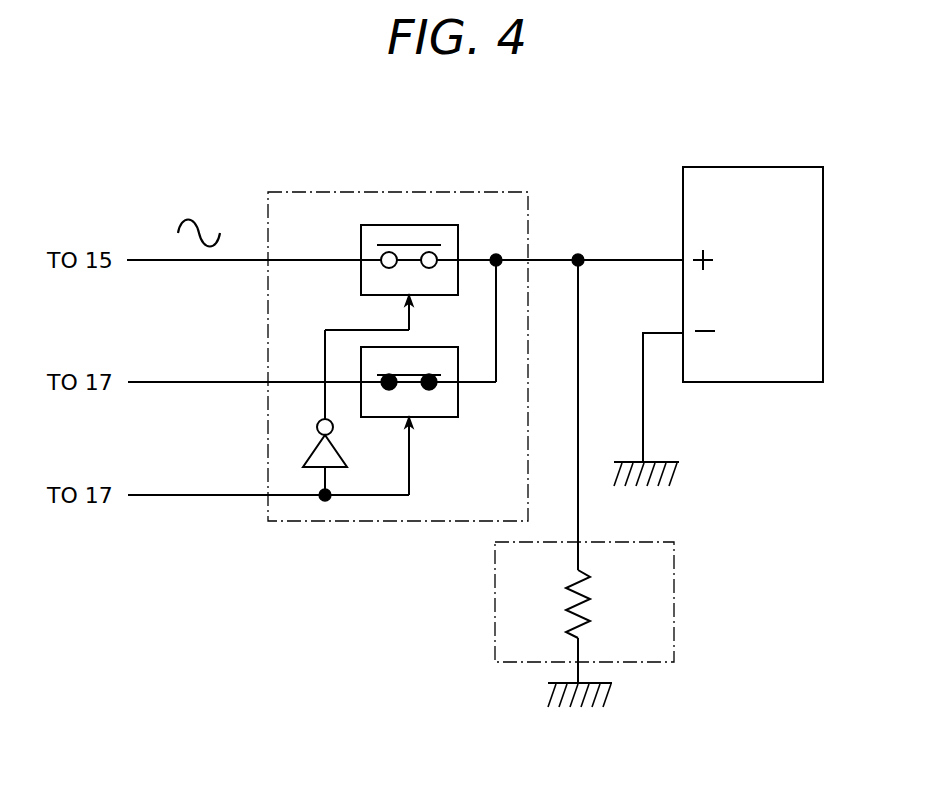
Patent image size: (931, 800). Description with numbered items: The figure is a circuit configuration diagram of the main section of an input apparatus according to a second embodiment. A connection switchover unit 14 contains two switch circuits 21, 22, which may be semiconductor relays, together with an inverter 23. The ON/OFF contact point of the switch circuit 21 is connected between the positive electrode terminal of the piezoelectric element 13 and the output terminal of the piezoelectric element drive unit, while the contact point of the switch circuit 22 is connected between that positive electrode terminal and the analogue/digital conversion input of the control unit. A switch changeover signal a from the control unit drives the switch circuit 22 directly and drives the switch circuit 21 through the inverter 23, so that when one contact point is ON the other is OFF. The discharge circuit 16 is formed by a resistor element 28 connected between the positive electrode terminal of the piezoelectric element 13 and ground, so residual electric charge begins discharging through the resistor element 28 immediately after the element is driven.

The piezoelectric element 13 is at (770, 167).
The connection switchover unit 14 is at (482, 192).
The discharge circuit 16 is at (625, 593).
The switch circuit 21 is at (361, 243).
The switch circuit 22 is at (440, 417).
The inverter 23 is at (310, 447).
The resistor element 28 is at (590, 598).
The switch changeover signal a is at (188, 497).